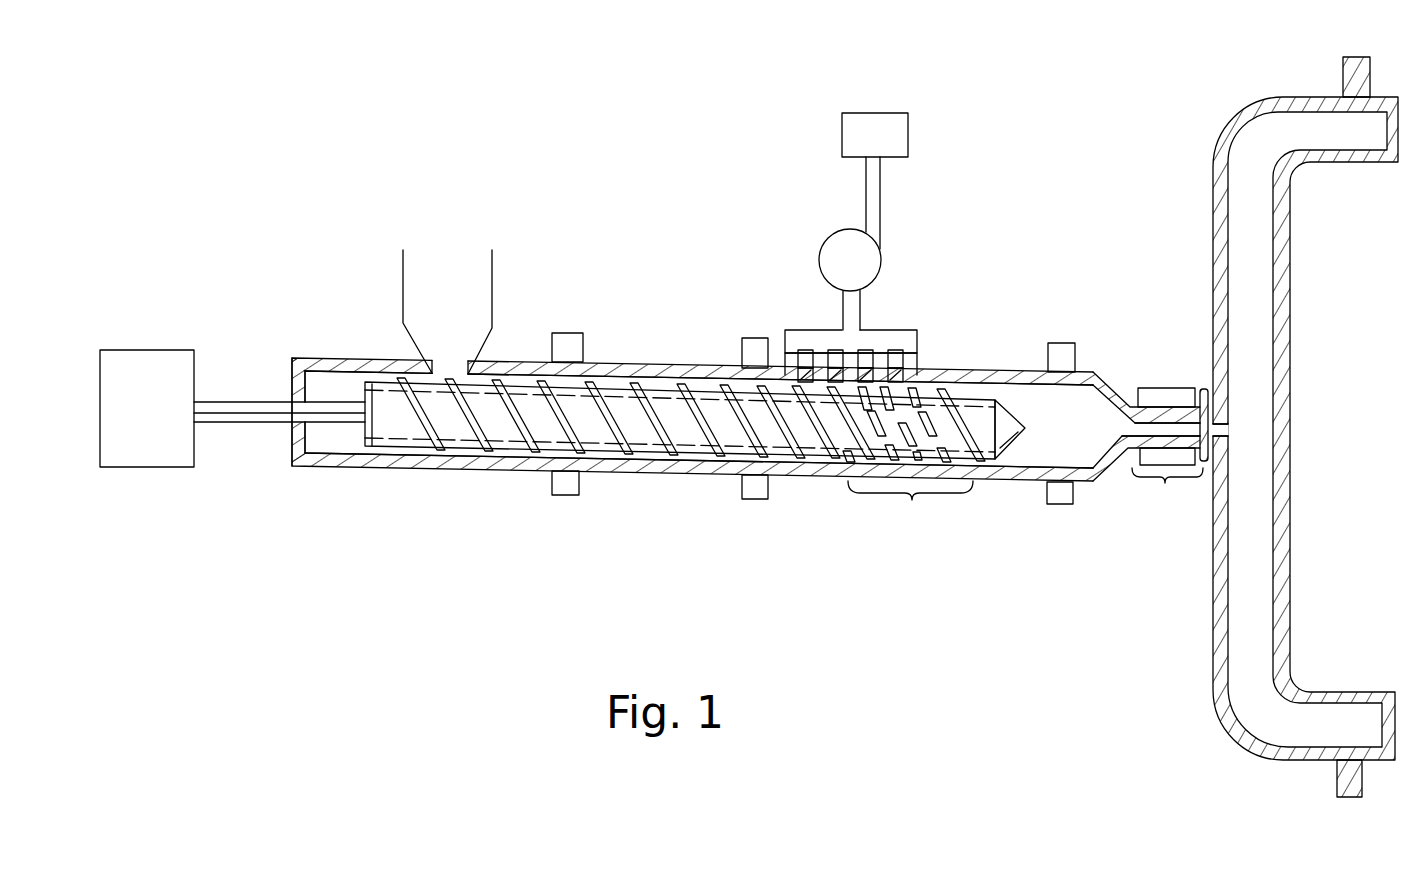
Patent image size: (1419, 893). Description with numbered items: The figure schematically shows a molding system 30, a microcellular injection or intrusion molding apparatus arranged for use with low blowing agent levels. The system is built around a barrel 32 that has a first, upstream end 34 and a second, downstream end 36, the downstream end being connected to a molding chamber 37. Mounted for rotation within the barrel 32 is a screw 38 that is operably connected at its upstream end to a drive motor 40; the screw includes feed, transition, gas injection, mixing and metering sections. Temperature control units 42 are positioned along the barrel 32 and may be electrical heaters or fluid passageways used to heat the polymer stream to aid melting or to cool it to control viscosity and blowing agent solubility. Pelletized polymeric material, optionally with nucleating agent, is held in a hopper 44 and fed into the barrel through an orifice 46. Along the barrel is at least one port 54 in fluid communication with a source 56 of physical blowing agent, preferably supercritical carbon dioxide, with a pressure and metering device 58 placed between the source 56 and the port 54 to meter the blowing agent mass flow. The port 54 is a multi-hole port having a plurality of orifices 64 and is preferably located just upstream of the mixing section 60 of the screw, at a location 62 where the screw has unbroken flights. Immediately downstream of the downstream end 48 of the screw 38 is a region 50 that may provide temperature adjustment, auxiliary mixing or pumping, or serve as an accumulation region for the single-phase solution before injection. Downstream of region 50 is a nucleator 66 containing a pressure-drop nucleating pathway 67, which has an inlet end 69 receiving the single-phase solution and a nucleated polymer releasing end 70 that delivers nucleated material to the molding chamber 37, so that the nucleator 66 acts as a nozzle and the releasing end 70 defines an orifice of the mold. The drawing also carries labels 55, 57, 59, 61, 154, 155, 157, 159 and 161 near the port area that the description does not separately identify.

The molding system 30 is at (543, 146).
The barrel 32 is at (423, 470).
The upstream end 34 is at (328, 468).
The downstream end 36 is at (1073, 432).
The molding chamber 37 is at (1231, 118).
The screw 38 is at (700, 386).
The drive motor 40 is at (166, 352).
The temperature control units 42 is at (569, 333).
The hopper 44 is at (452, 290).
The orifice 46 is at (440, 372).
The downstream end of screw 48 is at (1012, 447).
The region 50 is at (1082, 408).
The port 54 is at (880, 335).
The first sensor 55 is at (822, 360).
The source of physical blowing agent 56 is at (860, 113).
The second sensor 57 is at (803, 355).
The pressure and metering device 58 is at (846, 230).
The third sensor 59 is at (892, 355).
The mixing section 60 is at (912, 500).
The fourth sensor 61 is at (913, 355).
The location of unbroken flights 62 is at (846, 463).
The orifices 64 is at (1202, 388).
The nucleator 66 is at (1167, 488).
The pressure-drop nucleating pathway 67 is at (1168, 427).
The inlet end 69 is at (1120, 468).
The nucleated polymer releasing end 70 is at (1228, 428).
The first sensor lead 154 is at (887, 345).
The second sensor lead 155 is at (815, 362).
The third sensor lead 157 is at (795, 350).
The fourth sensor lead 159 is at (900, 355).
The fifth sensor lead 161 is at (920, 362).